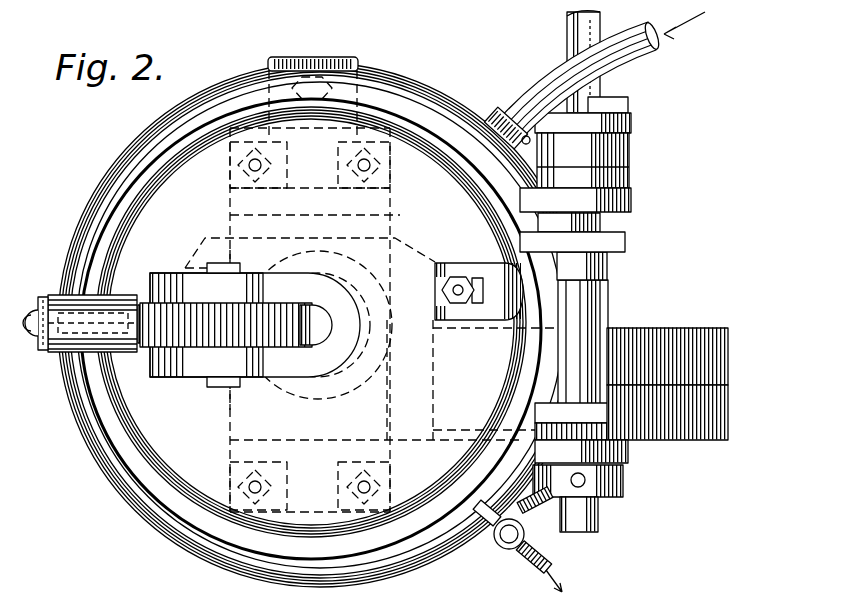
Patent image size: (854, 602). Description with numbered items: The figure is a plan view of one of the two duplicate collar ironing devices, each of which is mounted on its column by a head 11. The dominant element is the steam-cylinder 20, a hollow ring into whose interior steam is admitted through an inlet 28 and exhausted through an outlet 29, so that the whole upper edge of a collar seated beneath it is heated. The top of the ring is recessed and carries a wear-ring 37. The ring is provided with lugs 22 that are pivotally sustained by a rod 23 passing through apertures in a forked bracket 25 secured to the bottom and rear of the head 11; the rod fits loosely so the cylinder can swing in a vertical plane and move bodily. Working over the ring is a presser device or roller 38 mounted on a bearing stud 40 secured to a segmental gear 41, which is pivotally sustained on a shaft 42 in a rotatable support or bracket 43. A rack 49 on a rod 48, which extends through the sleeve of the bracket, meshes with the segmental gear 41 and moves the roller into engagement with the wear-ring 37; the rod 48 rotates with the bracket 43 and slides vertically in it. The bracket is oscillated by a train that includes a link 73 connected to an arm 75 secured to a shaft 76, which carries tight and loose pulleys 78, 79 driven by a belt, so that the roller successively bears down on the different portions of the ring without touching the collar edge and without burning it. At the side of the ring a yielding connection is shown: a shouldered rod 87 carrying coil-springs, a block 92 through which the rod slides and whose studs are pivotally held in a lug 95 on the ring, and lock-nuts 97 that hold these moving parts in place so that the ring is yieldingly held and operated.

The head 11 is at (208, 450).
The steam-cylinder 20 is at (94, 200).
The lugs 22 is at (625, 250).
The rod 23 is at (592, 313).
The forked bracket 25 is at (607, 266).
The inlet 28 is at (544, 85).
The outlet 29 is at (517, 539).
The wear-ring 37 is at (150, 170).
The presser device or roller 38 is at (82, 298).
The bearing stud 40 is at (36, 334).
The segmental gear 41 is at (198, 318).
The shaft 42 is at (212, 381).
The rotatable support or bracket 43 is at (255, 325).
The rod 48 is at (324, 329).
The rack 49 is at (320, 334).
The link 73 is at (606, 121).
The arm 75 is at (620, 143).
The shaft 76 is at (602, 224).
The tight pulley 78 is at (728, 411).
The loose pulley 79 is at (728, 354).
The rod 87 is at (444, 288).
The block 92 is at (438, 321).
The lug 95 is at (497, 307).
The lock-nuts 97 is at (450, 297).